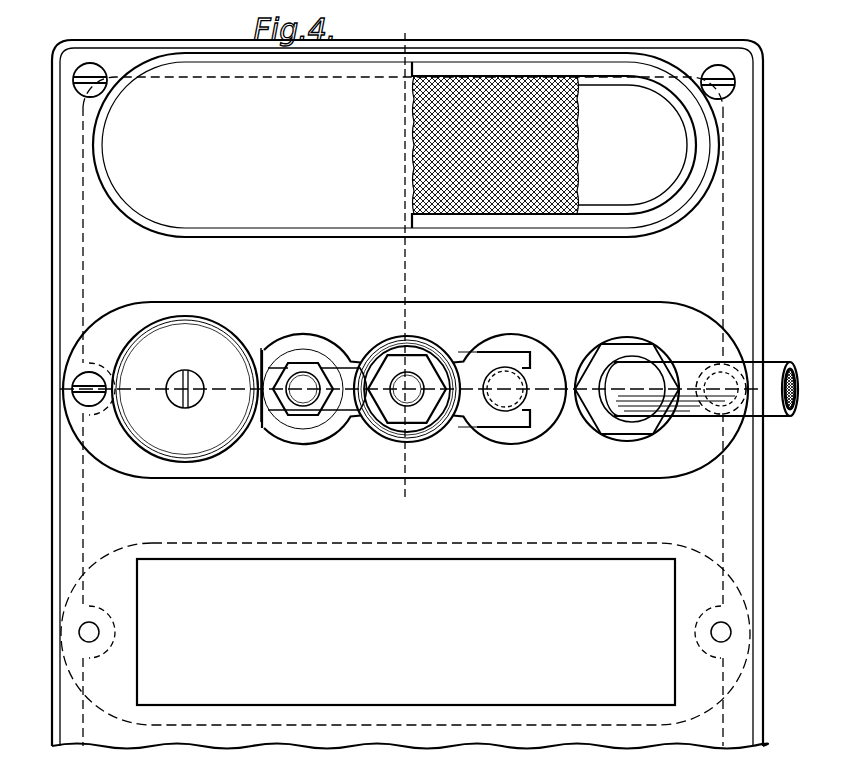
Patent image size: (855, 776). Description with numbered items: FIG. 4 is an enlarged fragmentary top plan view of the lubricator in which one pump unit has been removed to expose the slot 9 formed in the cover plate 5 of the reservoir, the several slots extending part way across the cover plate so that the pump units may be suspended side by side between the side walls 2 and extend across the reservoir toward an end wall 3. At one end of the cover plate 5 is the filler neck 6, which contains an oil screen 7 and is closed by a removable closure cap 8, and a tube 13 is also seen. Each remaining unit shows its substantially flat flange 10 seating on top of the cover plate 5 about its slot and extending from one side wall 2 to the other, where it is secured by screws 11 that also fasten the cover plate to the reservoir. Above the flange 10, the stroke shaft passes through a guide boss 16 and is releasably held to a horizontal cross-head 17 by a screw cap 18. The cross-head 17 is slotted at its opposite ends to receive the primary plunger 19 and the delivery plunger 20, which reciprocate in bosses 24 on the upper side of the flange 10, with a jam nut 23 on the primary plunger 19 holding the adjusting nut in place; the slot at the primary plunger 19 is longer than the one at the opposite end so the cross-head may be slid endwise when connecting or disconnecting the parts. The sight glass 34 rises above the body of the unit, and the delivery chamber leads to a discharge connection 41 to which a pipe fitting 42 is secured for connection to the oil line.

The side wall 2 is at (762, 242).
The end wall 3 is at (610, 44).
The cover plate 5 is at (365, 33).
The filler neck 6 is at (662, 76).
The oil screen 7 is at (485, 78).
The closure cap 8 is at (385, 210).
The slot 9 is at (210, 566).
The flange 10 is at (146, 315).
The screw 11 is at (89, 76).
The tube 13 is at (701, 389).
The guide boss 16 is at (392, 447).
The cross-head 17 is at (340, 362).
The screw cap 18 is at (415, 377).
The primary plunger 19 is at (303, 382).
The delivery plunger 20 is at (506, 385).
The jam nut 23 is at (283, 368).
The boss 24 is at (297, 440).
The sight glass 34 is at (140, 447).
The discharge connection 41 is at (641, 357).
The pipe fitting 42 is at (694, 400).